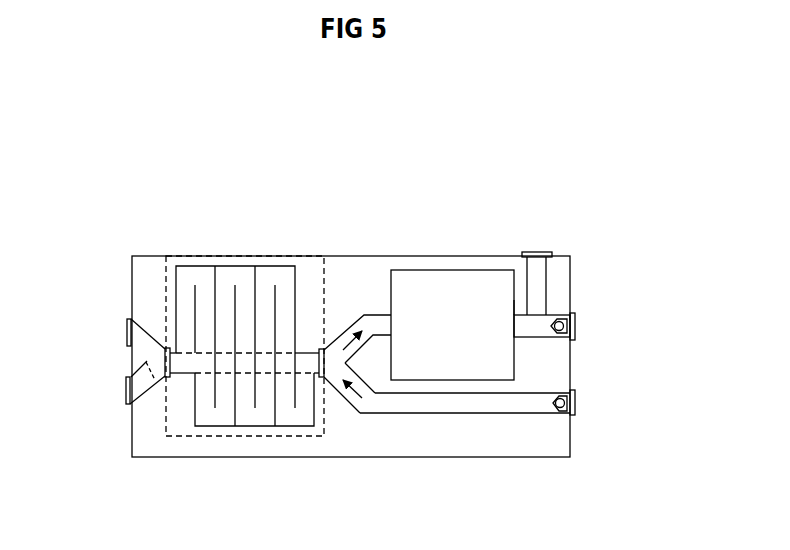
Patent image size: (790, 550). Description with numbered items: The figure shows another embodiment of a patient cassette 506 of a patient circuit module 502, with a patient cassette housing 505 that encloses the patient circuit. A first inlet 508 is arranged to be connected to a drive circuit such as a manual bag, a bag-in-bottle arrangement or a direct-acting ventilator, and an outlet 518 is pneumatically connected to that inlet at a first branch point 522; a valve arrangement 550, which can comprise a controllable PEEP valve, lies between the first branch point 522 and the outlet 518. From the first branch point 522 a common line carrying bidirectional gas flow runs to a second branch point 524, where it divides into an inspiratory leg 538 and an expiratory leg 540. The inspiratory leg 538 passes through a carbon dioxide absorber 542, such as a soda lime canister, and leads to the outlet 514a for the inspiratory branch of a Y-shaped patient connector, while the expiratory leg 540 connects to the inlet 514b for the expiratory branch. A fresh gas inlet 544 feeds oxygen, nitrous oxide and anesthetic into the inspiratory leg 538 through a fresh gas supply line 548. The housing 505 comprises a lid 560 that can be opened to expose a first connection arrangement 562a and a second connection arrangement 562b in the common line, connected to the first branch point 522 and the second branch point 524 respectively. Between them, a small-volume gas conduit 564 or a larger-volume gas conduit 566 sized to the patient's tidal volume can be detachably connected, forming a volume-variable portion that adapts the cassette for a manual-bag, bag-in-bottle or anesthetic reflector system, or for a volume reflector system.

The patient circuit module 502 is at (557, 157).
The patient cassette housing 505 is at (517, 457).
The patient cassette 506 is at (404, 446).
The first inlet 508 is at (127, 322).
The outlet 514a is at (575, 333).
The inlet 514b is at (575, 408).
The outlet 518 is at (127, 397).
The first branch point 522 is at (158, 362).
The second branch point 524 is at (333, 365).
The inspiratory leg 538 is at (521, 314).
The expiratory leg 540 is at (437, 413).
The carbon dioxide absorber 542 is at (470, 331).
The fresh gas inlet 544 is at (542, 252).
The fresh gas supply line 548 is at (546, 288).
The valve arrangement 550 is at (157, 390).
The lid 560 is at (166, 268).
The first connection arrangement 562a is at (166, 348).
The second connection arrangement 562b is at (319, 350).
The gas conduit 564 is at (203, 375).
The gas conduit 566 is at (203, 266).